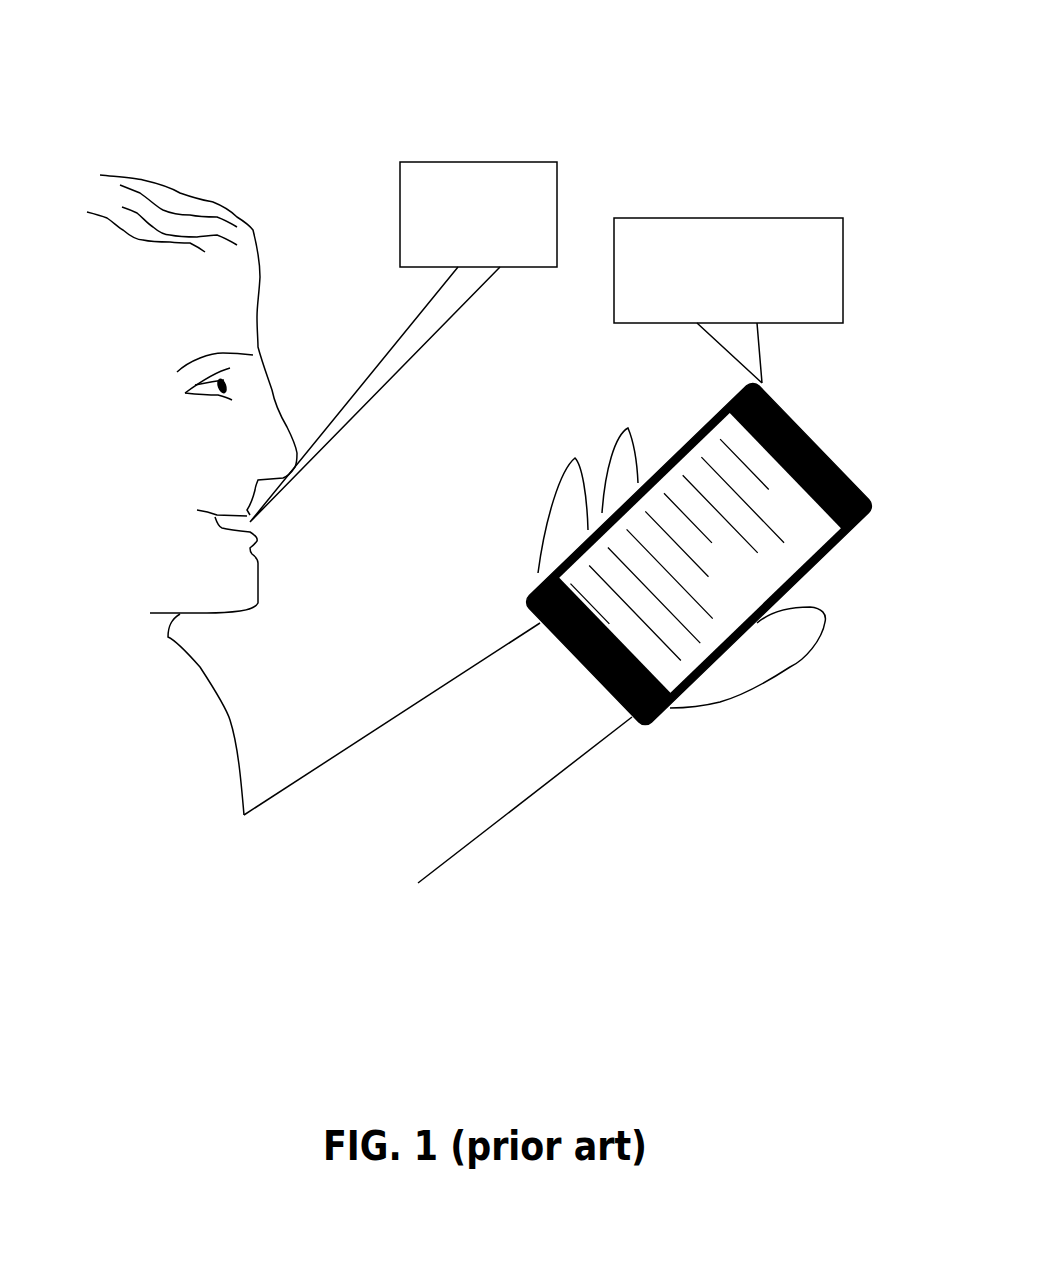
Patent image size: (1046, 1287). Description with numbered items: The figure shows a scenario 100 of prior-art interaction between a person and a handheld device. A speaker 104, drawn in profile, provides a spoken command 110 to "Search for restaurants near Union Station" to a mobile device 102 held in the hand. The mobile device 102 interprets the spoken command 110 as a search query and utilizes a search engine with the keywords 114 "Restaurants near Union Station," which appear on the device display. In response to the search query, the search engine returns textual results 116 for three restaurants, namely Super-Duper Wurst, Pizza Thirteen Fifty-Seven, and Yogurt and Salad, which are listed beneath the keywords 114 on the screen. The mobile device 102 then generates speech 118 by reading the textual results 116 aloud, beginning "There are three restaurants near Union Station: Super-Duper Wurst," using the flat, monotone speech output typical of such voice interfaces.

The scenario 100 is at (850, 33).
The mobile device 102 is at (801, 420).
The speaker 104 is at (233, 210).
The spoken command 110 is at (400, 202).
The keywords 114 is at (683, 443).
The textual results 116 is at (603, 500).
The speech 118 is at (753, 218).